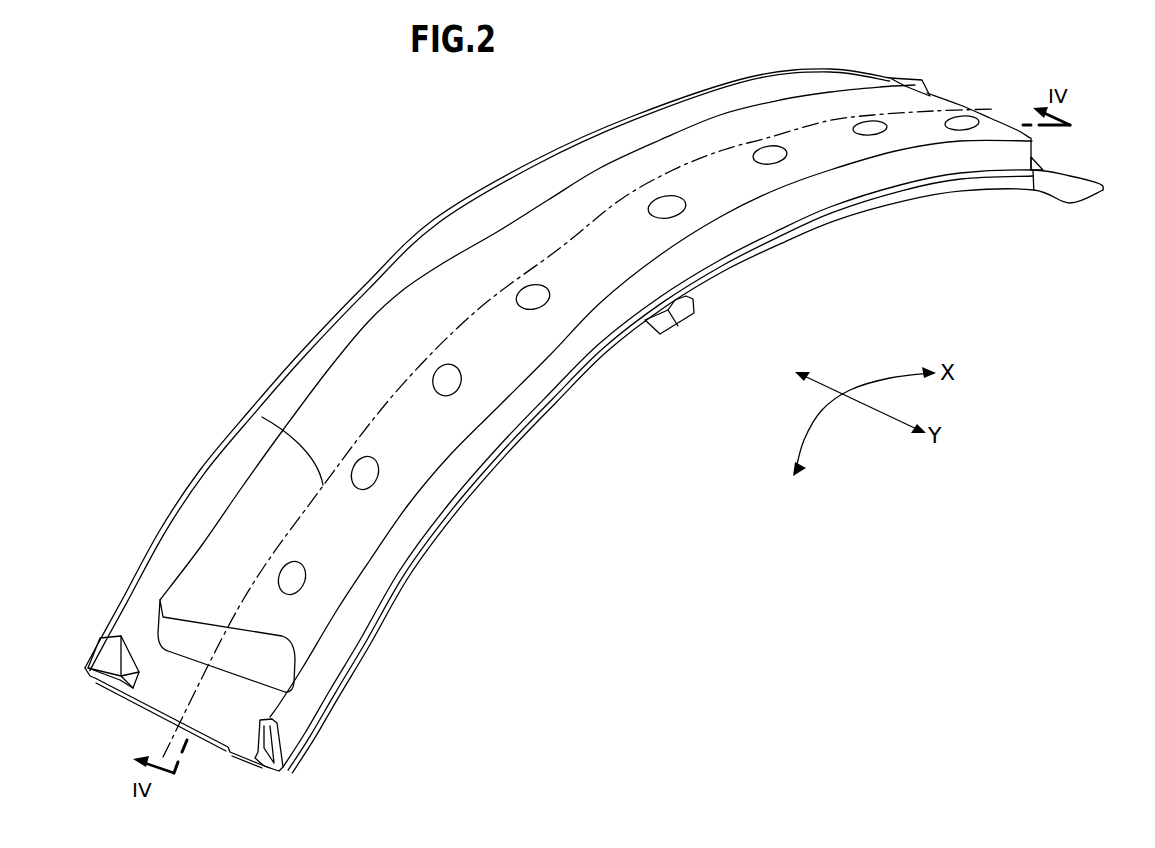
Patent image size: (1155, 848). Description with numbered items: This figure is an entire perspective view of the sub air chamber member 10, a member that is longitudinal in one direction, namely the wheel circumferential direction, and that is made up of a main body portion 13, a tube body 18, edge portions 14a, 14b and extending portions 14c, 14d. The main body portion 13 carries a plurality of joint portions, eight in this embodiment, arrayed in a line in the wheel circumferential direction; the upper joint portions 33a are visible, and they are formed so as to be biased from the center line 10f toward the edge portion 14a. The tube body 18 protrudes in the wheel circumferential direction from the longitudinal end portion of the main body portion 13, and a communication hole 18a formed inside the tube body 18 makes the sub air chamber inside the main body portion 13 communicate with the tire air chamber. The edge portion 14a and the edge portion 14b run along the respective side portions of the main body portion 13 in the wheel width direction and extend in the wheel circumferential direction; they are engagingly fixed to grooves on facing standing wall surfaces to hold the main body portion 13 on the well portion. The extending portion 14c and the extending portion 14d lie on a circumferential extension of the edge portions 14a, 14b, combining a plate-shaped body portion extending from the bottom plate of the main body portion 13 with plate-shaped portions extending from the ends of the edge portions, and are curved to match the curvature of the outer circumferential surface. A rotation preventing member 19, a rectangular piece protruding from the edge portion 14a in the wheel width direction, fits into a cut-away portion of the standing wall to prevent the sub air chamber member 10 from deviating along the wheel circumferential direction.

The sub air chamber member 10 is at (347, 273).
The center line 10f is at (250, 413).
The main body portion 13 is at (413, 427).
The edge portion 14a is at (590, 370).
The edge portion 14b is at (672, 123).
The extending portion 14c is at (165, 693).
The extending portion 14d is at (1038, 165).
The tube body 18 is at (273, 712).
The communication hole 18a is at (256, 770).
The rotation preventing member 19 is at (683, 310).
The upper joint portions 33a is at (667, 207).